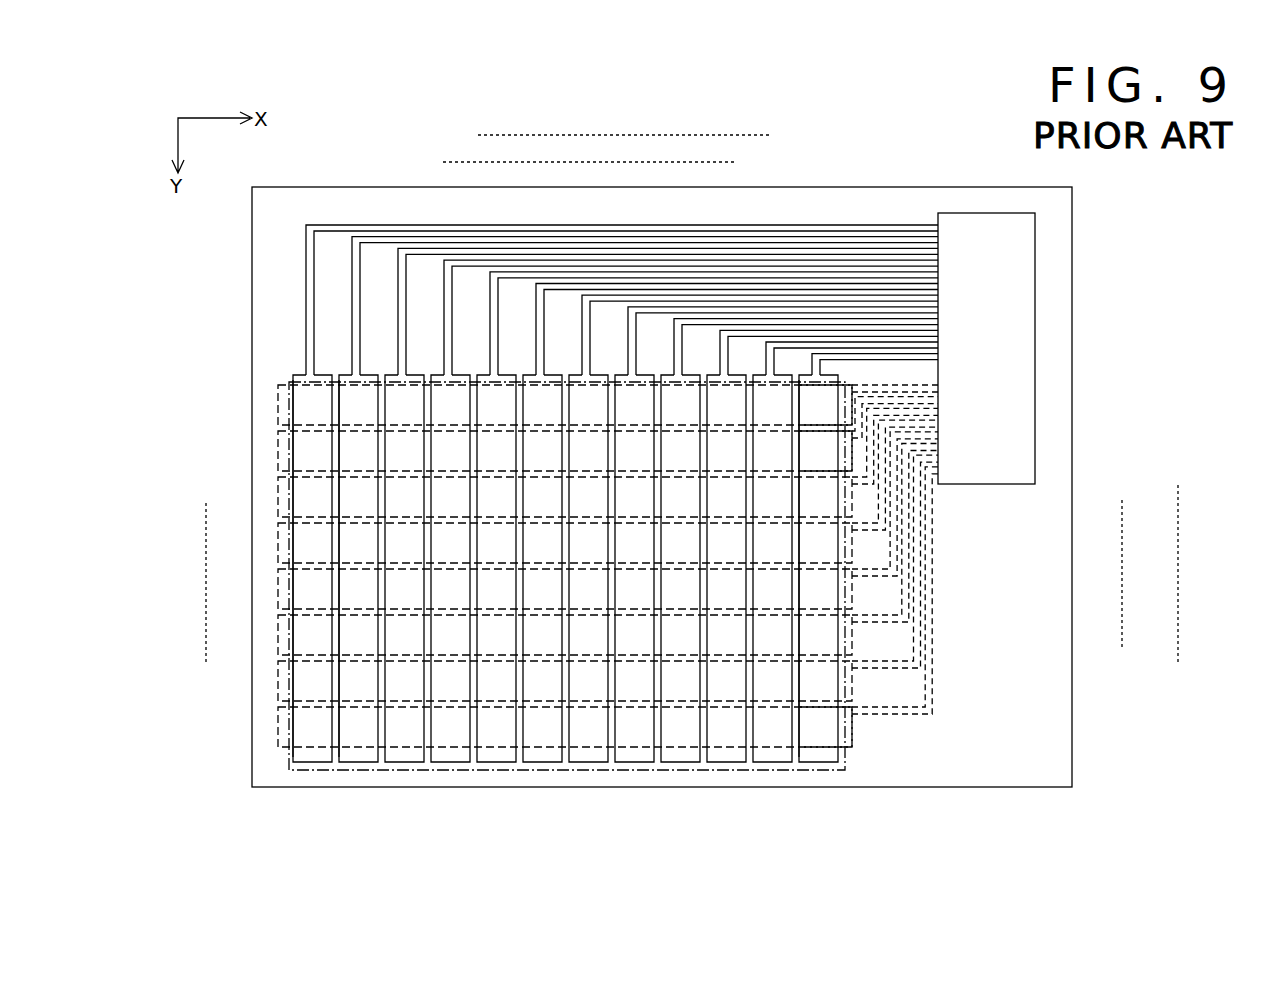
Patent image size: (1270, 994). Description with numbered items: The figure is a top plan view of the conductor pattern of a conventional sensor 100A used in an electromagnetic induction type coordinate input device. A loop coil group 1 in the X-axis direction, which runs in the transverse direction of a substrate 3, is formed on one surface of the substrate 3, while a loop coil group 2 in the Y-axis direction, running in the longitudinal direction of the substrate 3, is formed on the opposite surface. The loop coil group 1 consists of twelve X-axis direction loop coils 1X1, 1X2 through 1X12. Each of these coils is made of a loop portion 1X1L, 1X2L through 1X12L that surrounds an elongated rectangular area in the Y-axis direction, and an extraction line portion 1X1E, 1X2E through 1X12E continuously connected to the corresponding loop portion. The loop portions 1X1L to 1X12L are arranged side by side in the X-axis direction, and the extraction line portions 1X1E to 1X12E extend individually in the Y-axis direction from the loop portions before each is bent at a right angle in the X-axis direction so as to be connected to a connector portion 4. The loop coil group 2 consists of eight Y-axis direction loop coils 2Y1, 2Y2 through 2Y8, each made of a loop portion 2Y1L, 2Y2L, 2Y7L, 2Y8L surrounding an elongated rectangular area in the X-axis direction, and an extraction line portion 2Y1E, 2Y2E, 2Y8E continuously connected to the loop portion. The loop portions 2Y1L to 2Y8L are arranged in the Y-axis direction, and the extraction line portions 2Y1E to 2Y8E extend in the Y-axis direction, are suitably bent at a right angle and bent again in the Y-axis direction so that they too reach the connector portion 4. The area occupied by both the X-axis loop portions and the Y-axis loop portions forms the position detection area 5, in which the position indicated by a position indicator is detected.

The sensor 100A is at (364, 101).
The loop coil group in the X-axis direction 1 is at (855, 830).
The loop coil group in the Y-axis direction 2 is at (183, 392).
The substrate 3 is at (260, 237).
The connector portion 4 is at (1035, 257).
The position detection area 5 is at (290, 758).
The X-axis direction loop coil 1X1 is at (315, 762).
The X-axis direction loop coil 1X2 is at (360, 762).
The X-axis direction loop coil 1X12 is at (820, 762).
The loop portion 1X1L is at (292, 404).
The loop portion 1X2L is at (340, 397).
The loop portion 1X12L is at (800, 393).
The extraction line portion 1X1E is at (327, 225).
The extraction line portion 1X2E is at (388, 237).
The extraction line portion 1X12E is at (877, 354).
The Y-axis direction loop coil 2Y1 is at (278, 410).
The Y-axis direction loop coil 2Y2 is at (278, 456).
The Y-axis direction loop coil 2Y8 is at (278, 732).
The extraction line portion 2Y1E is at (905, 379).
The loop portion 2Y1L is at (812, 420).
The extraction line portion 2Y2E is at (900, 427).
The loop portion 2Y2L is at (812, 465).
The loop portion 2Y7L is at (812, 690).
The extraction line portion 2Y8E is at (930, 698).
The loop portion 2Y8L is at (812, 736).